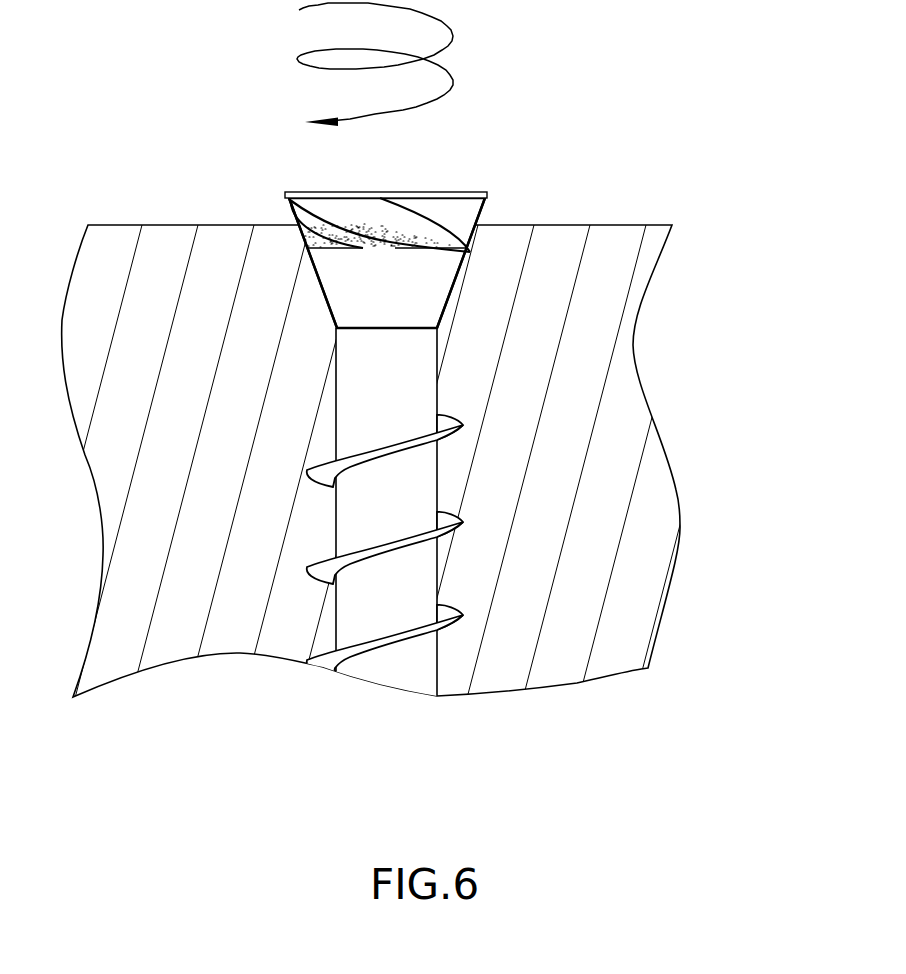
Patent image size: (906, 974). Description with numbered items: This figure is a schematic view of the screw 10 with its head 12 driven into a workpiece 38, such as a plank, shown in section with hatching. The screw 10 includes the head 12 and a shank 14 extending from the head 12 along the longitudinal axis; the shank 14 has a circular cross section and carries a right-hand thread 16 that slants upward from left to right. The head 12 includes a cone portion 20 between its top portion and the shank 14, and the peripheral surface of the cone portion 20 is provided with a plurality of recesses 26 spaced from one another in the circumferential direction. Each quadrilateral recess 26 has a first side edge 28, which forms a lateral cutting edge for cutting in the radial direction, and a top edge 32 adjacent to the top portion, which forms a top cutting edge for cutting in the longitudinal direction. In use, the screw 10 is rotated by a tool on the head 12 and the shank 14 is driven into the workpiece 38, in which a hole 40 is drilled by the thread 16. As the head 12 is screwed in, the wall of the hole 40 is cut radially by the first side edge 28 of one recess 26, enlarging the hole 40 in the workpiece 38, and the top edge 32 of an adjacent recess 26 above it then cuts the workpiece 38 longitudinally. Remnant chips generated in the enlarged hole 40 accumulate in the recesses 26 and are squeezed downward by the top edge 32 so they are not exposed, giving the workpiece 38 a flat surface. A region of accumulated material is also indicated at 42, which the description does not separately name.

The screw 10 is at (394, 397).
The head 12 is at (432, 375).
The shank 14 is at (398, 593).
The thread 16 is at (440, 632).
The cone portion 20 is at (432, 219).
The recess 26 is at (474, 181).
The first side edge 28 is at (446, 228).
The top edge 32 is at (330, 196).
The workpiece 38 is at (597, 653).
The hole 40 is at (323, 298).
The coating 42 is at (423, 232).